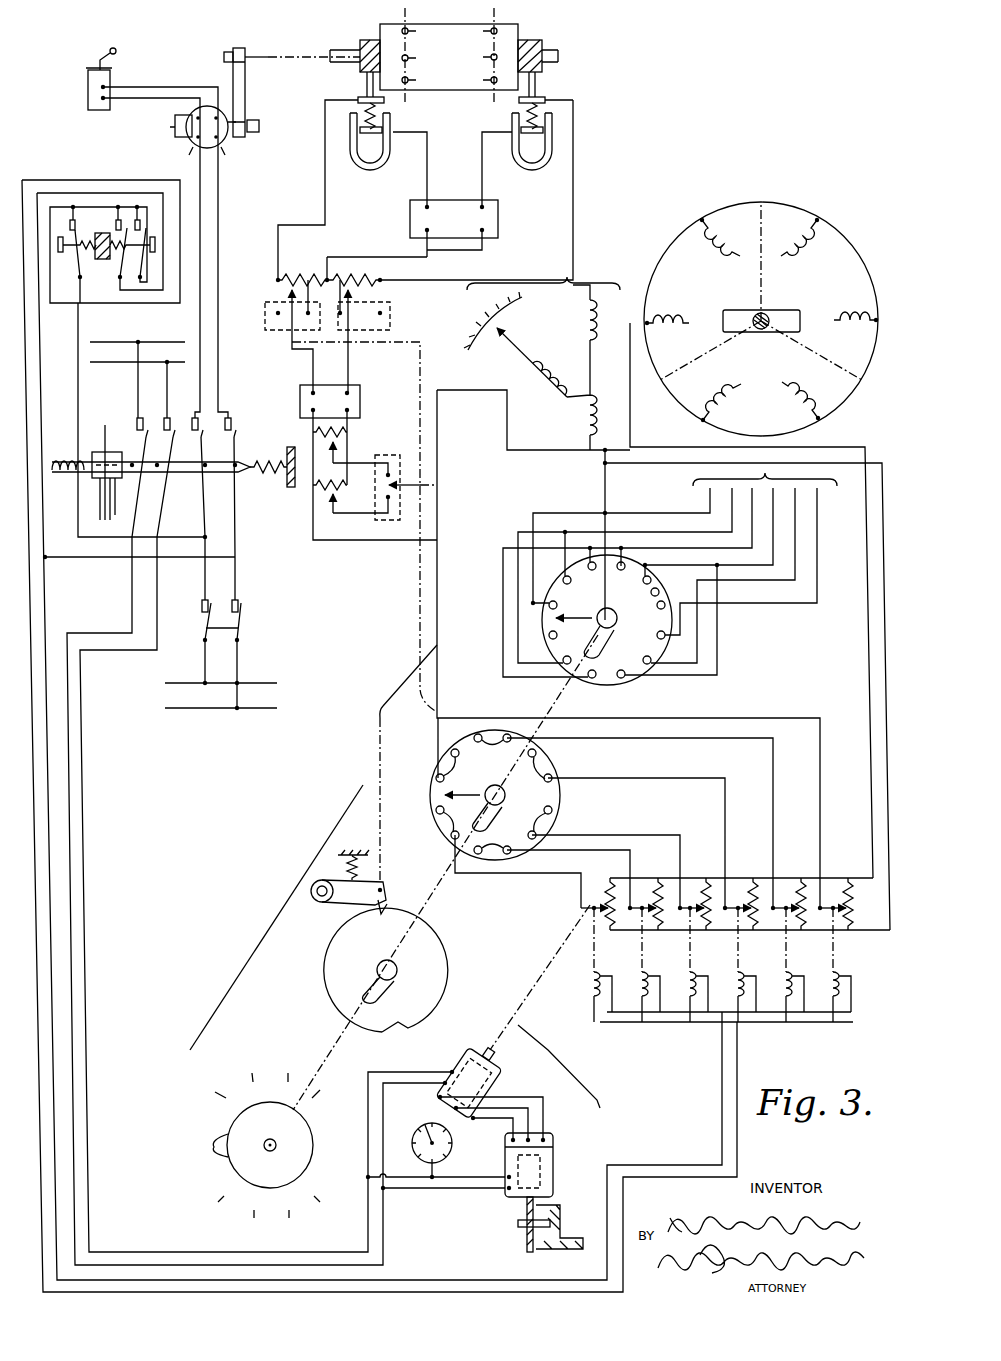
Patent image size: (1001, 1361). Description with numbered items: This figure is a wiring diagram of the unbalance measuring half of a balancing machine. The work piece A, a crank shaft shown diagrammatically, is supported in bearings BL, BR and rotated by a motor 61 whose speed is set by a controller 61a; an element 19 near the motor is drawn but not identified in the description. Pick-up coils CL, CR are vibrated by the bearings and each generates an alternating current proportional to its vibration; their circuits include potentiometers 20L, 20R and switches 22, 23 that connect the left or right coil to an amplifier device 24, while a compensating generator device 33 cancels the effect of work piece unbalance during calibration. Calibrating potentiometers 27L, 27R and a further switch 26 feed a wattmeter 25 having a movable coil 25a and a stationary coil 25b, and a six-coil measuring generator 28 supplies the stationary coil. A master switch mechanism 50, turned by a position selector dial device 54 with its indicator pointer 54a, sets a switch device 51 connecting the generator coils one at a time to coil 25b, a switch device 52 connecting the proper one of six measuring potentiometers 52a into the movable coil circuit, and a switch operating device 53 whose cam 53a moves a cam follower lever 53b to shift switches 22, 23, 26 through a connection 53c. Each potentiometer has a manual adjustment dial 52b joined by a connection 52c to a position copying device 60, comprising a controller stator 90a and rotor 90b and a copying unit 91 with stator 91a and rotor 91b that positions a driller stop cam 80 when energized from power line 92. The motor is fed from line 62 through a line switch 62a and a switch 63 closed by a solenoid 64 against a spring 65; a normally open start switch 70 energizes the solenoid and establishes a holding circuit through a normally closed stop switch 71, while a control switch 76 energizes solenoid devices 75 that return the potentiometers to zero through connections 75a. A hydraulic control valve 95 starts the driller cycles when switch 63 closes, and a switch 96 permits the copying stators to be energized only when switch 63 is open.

The shaft lever 19 is at (335, 50).
The motor 61 is at (200, 127).
The controller 61a is at (88, 84).
The stop switch 71 is at (78, 215).
The control switch 76 is at (121, 216).
The start switch 70 is at (139, 216).
The power line 92 is at (124, 354).
The switch 96 is at (152, 426).
The hydraulic control valve 95 is at (96, 452).
The solenoid 64 is at (64, 460).
The switch 63 is at (214, 428).
The spring 65 is at (270, 472).
The line 62 is at (258, 700).
The line switch 62a is at (240, 632).
The work piece A is at (450, 72).
The left bearing BL is at (366, 27).
The right bearing BR is at (532, 40).
The left pick-up coil CL is at (360, 97).
The right pick-up coil CR is at (543, 96).
The compensating generator device 33 is at (498, 214).
The left potentiometer 20L is at (300, 280).
The right potentiometer 20R is at (340, 280).
The switch 22 is at (278, 330).
The switch 23 is at (390, 318).
The amplifier device 24 is at (300, 407).
The left calibrating potentiometer 27L is at (347, 433).
The right calibrating potentiometer 27R is at (313, 486).
The switch 26 is at (390, 520).
The wattmeter 25 is at (540, 330).
The movable coil 25a is at (552, 374).
The stationary coil 25b is at (582, 416).
The measuring generator 28 is at (848, 186).
The switch device 51 is at (628, 688).
The switch device 52 is at (567, 799).
The measuring potentiometers 52a is at (690, 882).
The manual adjustment dial 52b is at (453, 1143).
The connection 52c is at (528, 992).
The switch operating device 53 is at (430, 976).
The cam 53a is at (342, 985).
The cam follower lever 53b is at (352, 900).
The connection 53c is at (380, 772).
The master switch mechanism 50 is at (282, 898).
The position selector dial device 54 is at (205, 1098).
The selector indicator pointer 54a is at (213, 1148).
The position copying device 60 is at (559, 1066).
The solenoid device 75 is at (591, 986).
The connection 75a is at (593, 976).
The stop cam 80 is at (519, 1225).
The stator 90a is at (450, 1063).
The rotor 90b is at (501, 1086).
The copying unit 91 is at (553, 1146).
The stator 91a is at (541, 1173).
The rotor 91b is at (541, 1162).